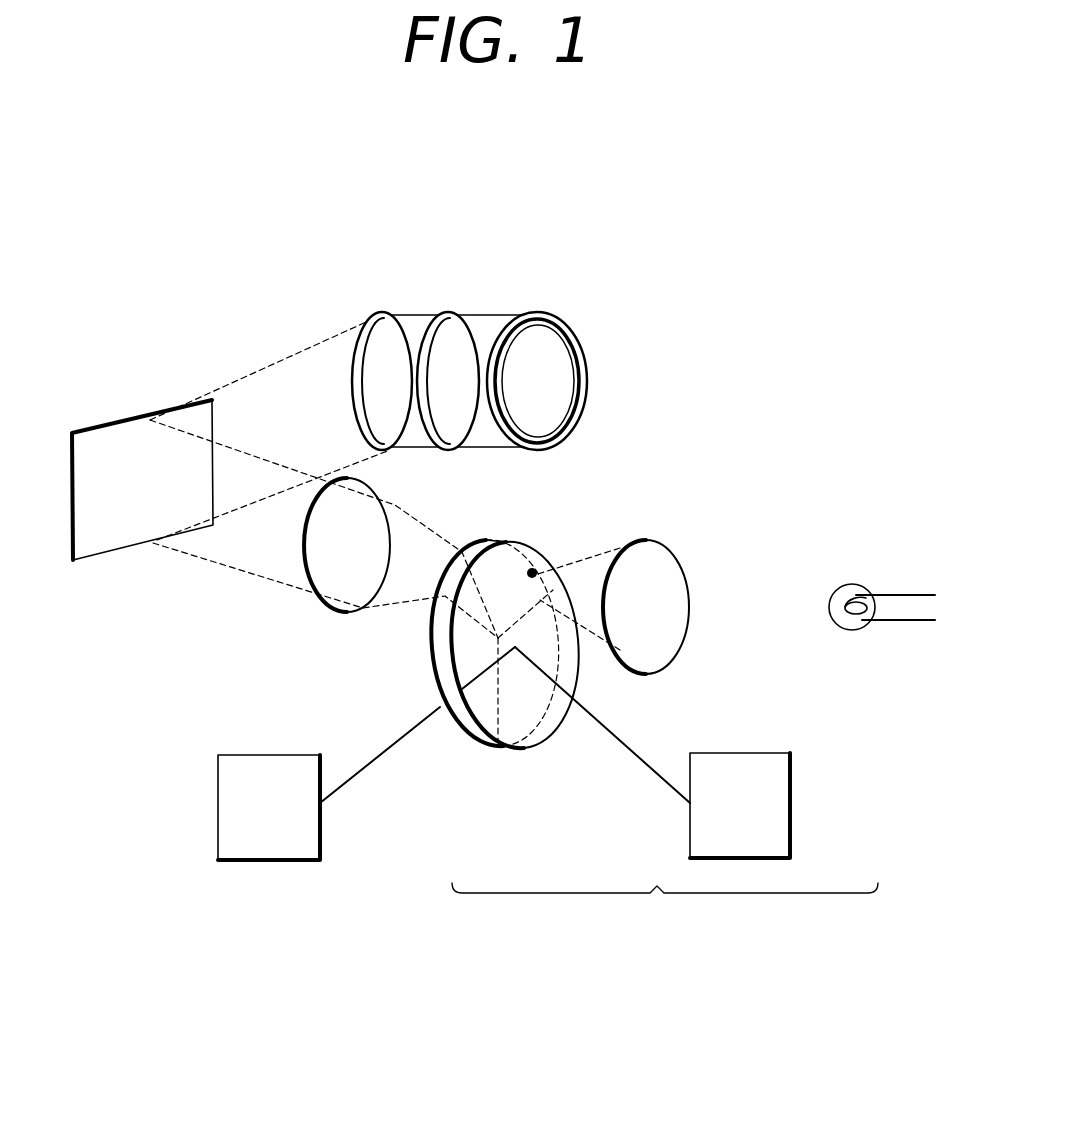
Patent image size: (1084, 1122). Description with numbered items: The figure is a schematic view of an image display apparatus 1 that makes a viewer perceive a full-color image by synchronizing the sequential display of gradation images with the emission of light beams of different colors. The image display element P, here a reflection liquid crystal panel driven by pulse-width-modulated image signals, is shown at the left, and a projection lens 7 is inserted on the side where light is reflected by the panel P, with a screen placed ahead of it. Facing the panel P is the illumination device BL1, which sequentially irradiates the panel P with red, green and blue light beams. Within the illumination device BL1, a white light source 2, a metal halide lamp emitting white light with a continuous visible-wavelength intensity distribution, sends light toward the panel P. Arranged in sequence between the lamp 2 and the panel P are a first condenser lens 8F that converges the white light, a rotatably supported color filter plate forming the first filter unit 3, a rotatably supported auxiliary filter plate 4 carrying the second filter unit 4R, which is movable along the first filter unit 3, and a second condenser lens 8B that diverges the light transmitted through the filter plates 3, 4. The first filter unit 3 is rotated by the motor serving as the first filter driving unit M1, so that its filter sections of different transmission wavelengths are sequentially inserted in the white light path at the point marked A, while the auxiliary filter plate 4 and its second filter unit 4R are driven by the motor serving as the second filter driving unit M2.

The image display apparatus 1 is at (605, 248).
The white light source 2 is at (850, 632).
The first filter unit 3 is at (462, 730).
The auxiliary filter plate 4 is at (540, 744).
The second filter unit 4R is at (563, 698).
The projection lens 7 is at (495, 447).
The second condenser lens 8B is at (348, 613).
The first condenser lens 8F is at (662, 542).
The optical path of the white light A is at (537, 568).
The image display element P is at (122, 550).
The first filter driving unit M1 is at (366, 753).
The second filter driving unit M2 is at (652, 752).
The illumination device BL1 is at (665, 909).